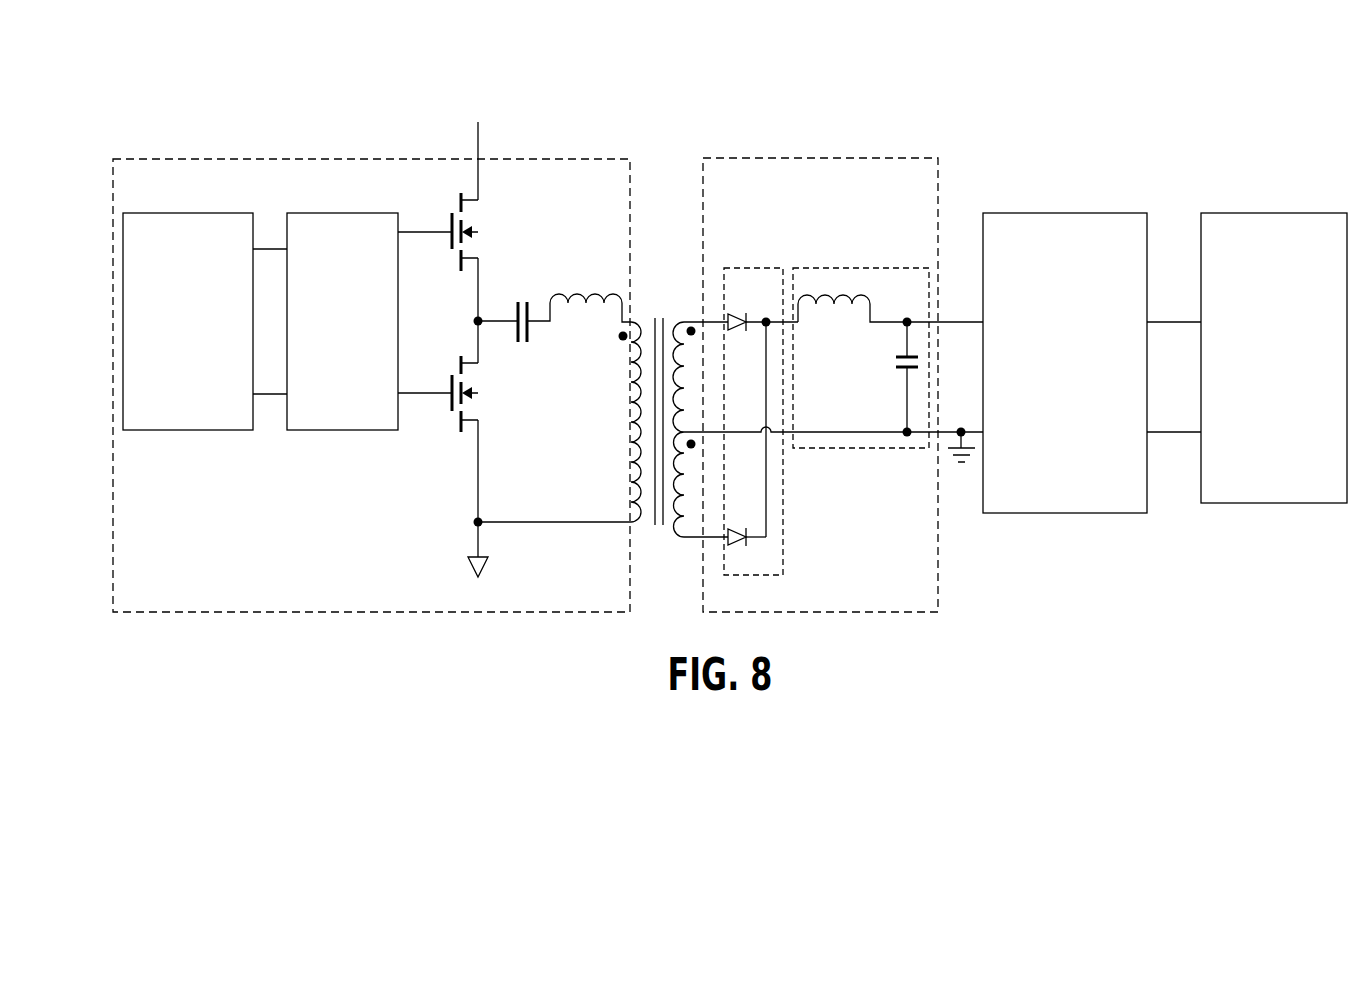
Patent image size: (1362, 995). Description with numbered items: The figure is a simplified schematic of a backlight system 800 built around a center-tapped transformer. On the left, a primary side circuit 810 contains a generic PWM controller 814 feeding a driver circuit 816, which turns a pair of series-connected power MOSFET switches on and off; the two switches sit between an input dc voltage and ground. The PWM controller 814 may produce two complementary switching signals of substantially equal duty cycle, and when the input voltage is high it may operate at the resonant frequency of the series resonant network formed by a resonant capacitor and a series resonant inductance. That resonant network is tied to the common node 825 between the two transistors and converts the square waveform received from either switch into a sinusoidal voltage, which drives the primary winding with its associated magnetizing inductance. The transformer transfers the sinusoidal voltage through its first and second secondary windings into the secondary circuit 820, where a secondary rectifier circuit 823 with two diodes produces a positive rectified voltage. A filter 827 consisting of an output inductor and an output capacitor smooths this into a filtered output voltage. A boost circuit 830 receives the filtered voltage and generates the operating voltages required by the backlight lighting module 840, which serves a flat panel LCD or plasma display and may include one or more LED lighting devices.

The backlight system 800 is at (922, 65).
The primary side circuit 810 is at (262, 156).
The PWM controller 814 is at (197, 250).
The driver circuit 816 is at (350, 250).
The secondary circuit 820 is at (772, 156).
The secondary rectifier circuit 823 is at (741, 411).
The common node 825 is at (458, 321).
The filter 827 is at (888, 346).
The boost circuit 830 is at (1073, 258).
The backlight lighting module 840 is at (1263, 258).